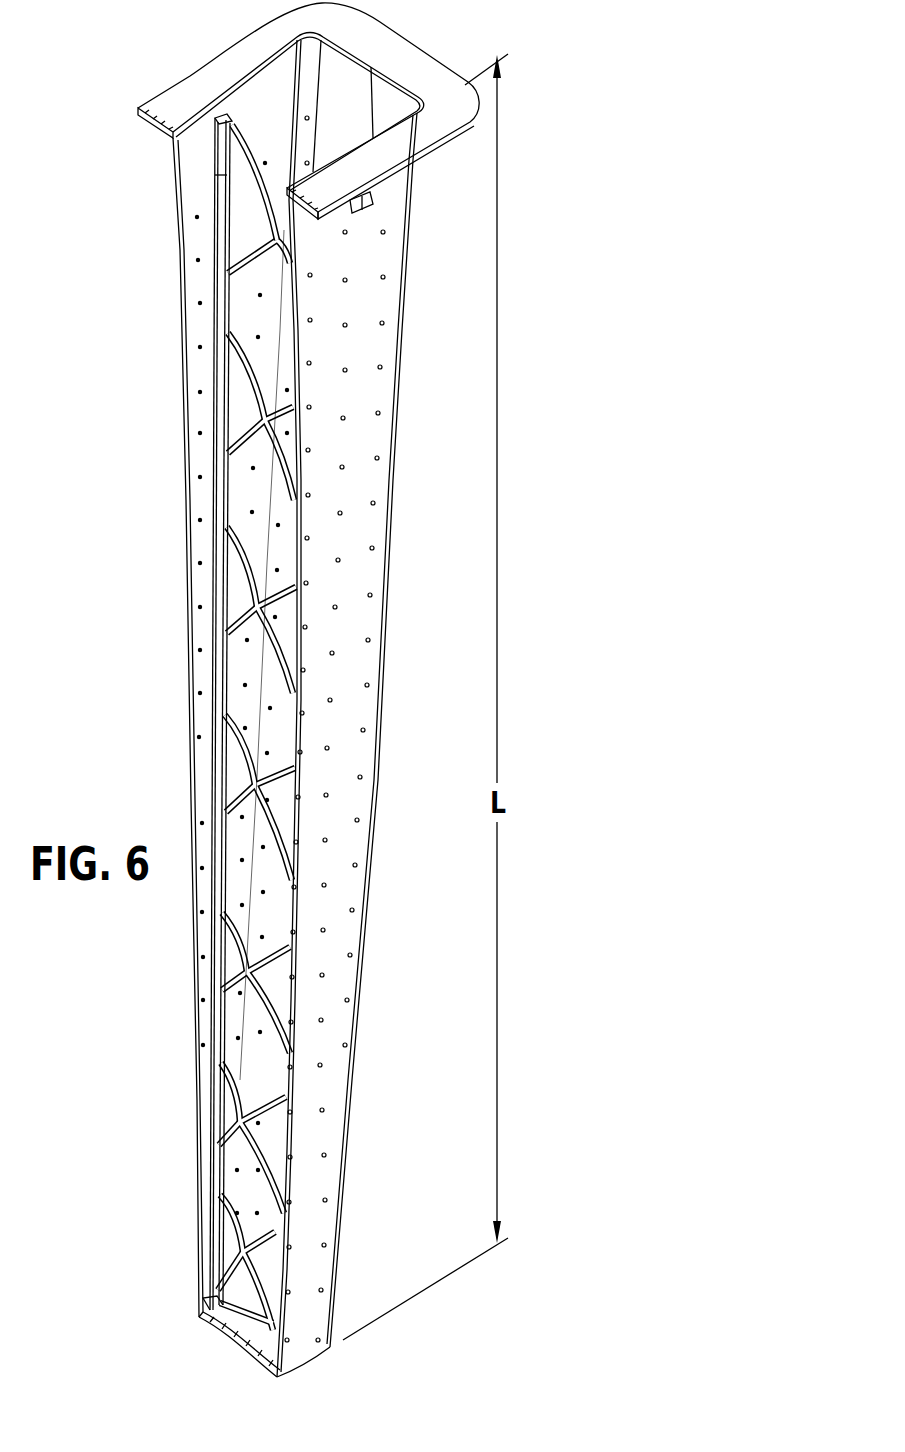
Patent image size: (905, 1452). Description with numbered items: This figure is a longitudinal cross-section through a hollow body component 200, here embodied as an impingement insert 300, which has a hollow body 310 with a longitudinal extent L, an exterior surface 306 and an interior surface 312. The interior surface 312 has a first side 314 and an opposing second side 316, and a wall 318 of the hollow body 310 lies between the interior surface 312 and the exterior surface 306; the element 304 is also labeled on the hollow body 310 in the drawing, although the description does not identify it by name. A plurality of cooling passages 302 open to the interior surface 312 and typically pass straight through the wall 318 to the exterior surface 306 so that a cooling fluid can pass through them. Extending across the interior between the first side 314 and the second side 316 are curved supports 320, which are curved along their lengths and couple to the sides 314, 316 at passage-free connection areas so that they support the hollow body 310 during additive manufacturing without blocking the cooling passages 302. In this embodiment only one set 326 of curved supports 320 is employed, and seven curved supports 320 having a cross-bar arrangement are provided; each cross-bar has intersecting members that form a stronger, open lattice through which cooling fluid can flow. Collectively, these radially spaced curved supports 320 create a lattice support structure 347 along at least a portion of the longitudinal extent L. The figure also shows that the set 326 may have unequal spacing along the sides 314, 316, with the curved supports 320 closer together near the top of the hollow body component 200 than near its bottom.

The hollow body component 200 is at (408, 226).
The impingement insert 300 is at (289, 708).
The cooling passages 302 is at (385, 277).
The outer wall 304 is at (363, 348).
The exterior surface 306 is at (377, 425).
The hollow body 310 is at (203, 127).
The interior surface 312 is at (347, 75).
The first side 314 is at (206, 618).
The second side 316 is at (297, 740).
The wall 318 is at (212, 696).
The curved supports 320 is at (240, 414).
The first set of curved supports 326 is at (247, 120).
The lattice support structure 347 is at (240, 972).